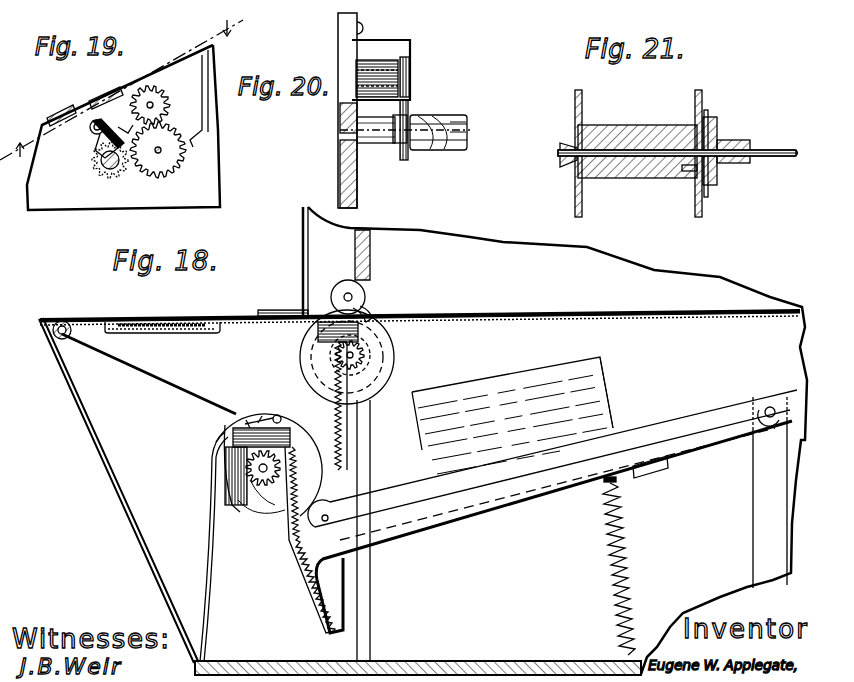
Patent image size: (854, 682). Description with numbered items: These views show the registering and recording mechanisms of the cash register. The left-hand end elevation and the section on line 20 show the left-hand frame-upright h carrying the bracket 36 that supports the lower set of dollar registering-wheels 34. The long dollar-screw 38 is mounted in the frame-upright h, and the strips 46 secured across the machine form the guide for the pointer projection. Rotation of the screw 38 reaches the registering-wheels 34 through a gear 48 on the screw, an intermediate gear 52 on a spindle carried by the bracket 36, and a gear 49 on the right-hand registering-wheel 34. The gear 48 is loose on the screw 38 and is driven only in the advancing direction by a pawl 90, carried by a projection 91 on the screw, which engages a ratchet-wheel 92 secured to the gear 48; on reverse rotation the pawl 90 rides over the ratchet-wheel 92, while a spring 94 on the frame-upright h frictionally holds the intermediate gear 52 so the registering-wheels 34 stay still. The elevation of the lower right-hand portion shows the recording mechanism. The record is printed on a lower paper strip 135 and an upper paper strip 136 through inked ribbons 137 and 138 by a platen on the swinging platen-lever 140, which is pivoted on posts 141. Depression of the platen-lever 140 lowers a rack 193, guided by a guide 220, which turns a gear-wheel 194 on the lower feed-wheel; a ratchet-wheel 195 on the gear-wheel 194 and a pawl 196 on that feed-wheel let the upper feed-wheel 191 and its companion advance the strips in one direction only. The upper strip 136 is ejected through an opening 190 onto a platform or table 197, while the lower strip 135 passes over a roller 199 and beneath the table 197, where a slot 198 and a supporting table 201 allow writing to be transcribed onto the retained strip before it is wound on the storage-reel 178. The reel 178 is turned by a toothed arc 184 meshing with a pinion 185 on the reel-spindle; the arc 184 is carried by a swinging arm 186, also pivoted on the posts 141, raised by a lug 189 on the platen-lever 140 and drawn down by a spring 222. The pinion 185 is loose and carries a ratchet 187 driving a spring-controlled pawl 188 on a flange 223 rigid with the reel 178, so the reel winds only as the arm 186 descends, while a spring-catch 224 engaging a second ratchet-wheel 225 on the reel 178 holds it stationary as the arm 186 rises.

In FIG. 19, the left-hand frame-upright h is at (208, 195).
In FIG. 19, the section line 20 is at (132, 92).
In FIG. 20, the registering-wheels 34 is at (382, 61).
In FIG. 20, the bracket 36 is at (411, 48).
In FIG. 19, the dollar-screw 38 is at (104, 166).
In FIG. 19, the strips 46 is at (52, 118).
In FIG. 19, the gear 48 is at (118, 176).
In FIG. 20, the gear 48 is at (405, 156).
In FIG. 19, the gear 49 is at (165, 101).
In FIG. 20, the gear 49 is at (410, 70).
In FIG. 19, the intermediate gear 52 is at (176, 160).
In FIG. 20, the intermediate gear 52 is at (408, 101).
In FIG. 19, the pawl 90 is at (91, 132).
In FIG. 19, the projection 91 is at (98, 140).
In FIG. 19, the ratchet-wheel 92 is at (127, 122).
In FIG. 20, the ratchet-wheel 92 is at (395, 120).
In FIG. 19, the spring 94 is at (205, 115).
In FIG. 18, the lower paper strip 135 is at (150, 374).
In FIG. 18, the upper paper strip 136 is at (386, 317).
In FIG. 18, the inked ribbon 137 is at (436, 321).
In FIG. 18, the inked ribbon 138 is at (431, 314).
In FIG. 18, the swinging lever 140 is at (640, 411).
In FIG. 18, the posts 141 is at (527, 388).
In FIG. 21, the storage-reel 178 is at (608, 125).
In FIG. 18, the toothed arc 184 is at (310, 565).
In FIG. 21, the pinion 185 is at (720, 141).
In FIG. 18, the pinion 185 is at (266, 488).
In FIG. 18, the swinging arm 186 is at (491, 505).
In FIG. 21, the ratchet 187 is at (712, 116).
In FIG. 18, the ratchet 187 is at (226, 443).
In FIG. 18, the spring-controlled pawl 188 is at (265, 416).
In FIG. 18, the lug 189 is at (655, 478).
In FIG. 18, the opening 190 is at (295, 310).
In FIG. 18, the upper feed-wheel 191 is at (344, 289).
In FIG. 18, the rack 193 is at (348, 420).
In FIG. 18, the gear-wheel 194 is at (358, 364).
In FIG. 18, the ratchet-wheel 195 is at (394, 366).
In FIG. 18, the pawl 196 is at (335, 322).
In FIG. 18, the platform or table 197 is at (60, 320).
In FIG. 18, the slot 198 is at (188, 321).
In FIG. 18, the roller 199 is at (71, 334).
In FIG. 18, the table 201 is at (150, 333).
In FIG. 18, the guide 220 is at (330, 350).
In FIG. 18, the spring 222 is at (627, 556).
In FIG. 21, the flange 223 is at (707, 198).
In FIG. 18, the flange 223 is at (222, 447).
In FIG. 18, the spring-catch 224 is at (209, 560).
In FIG. 21, the second ratchet-wheel 225 is at (703, 108).
In FIG. 18, the second ratchet-wheel 225 is at (230, 492).